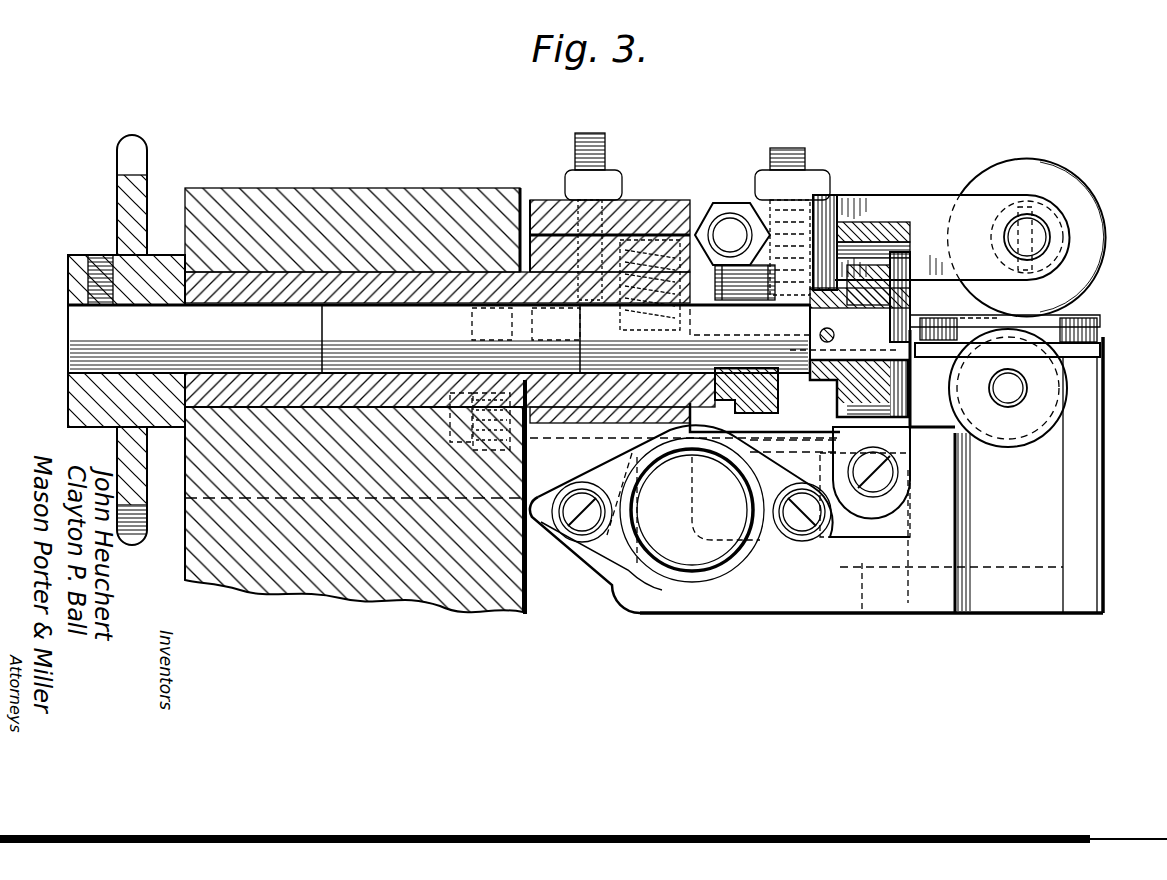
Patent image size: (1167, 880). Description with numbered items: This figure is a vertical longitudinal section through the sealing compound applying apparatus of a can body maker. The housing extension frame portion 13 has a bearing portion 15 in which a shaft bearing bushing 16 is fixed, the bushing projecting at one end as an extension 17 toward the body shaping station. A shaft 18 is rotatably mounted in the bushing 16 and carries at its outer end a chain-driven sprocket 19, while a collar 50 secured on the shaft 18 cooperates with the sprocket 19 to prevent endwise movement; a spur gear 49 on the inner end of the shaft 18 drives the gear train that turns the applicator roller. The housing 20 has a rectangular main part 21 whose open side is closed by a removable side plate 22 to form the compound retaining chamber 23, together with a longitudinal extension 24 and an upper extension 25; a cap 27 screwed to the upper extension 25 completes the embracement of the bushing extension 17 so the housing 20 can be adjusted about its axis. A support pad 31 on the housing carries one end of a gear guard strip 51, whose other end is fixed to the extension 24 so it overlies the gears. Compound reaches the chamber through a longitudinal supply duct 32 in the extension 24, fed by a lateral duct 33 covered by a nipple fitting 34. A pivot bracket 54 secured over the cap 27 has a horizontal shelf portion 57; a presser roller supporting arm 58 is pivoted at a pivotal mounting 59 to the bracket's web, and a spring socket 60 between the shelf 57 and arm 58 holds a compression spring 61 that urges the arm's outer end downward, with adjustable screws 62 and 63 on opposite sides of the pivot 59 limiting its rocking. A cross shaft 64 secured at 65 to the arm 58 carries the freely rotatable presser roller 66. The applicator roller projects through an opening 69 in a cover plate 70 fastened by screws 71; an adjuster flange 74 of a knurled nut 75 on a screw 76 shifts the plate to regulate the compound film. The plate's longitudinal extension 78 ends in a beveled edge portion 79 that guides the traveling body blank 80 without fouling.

The housing extension frame portion 13 is at (332, 590).
The bearing portion 15 is at (313, 196).
The shaft bearing bushing 16 is at (224, 283).
The bushing extension 17 is at (555, 400).
The shaft 18 is at (439, 339).
The sprocket 19 is at (140, 135).
The housing 20 is at (1050, 556).
The rectangular main part 21 is at (882, 471).
The removable side plate 22 is at (1085, 506).
The sealing compound retaining chamber 23 is at (1085, 462).
The longitudinal extension 24 is at (768, 590).
The upper extension 25 is at (548, 470).
The cap 27 is at (503, 213).
The support pad 31 is at (778, 406).
The longitudinal compound supply duct 32 is at (866, 568).
The lateral duct 33 is at (665, 556).
The nipple fitting 34 is at (700, 582).
The spur gear 49 is at (938, 311).
The collar 50 is at (760, 420).
The gear guard strip 51 is at (860, 230).
The pivot bracket 54 is at (553, 245).
The horizontal shelf portion 57 is at (700, 326).
The presser roller supporting arm 58 is at (925, 200).
The pivotal mounting 59 is at (730, 230).
The spring socket 60 is at (644, 200).
The compression spring 61 is at (633, 285).
The adjustable screw 62 is at (790, 150).
The adjustable screw 63 is at (595, 133).
The cross shaft 64 is at (1045, 238).
The cross shaft securement 65 is at (1040, 207).
The presser roller 66 is at (1046, 172).
The opening 69 is at (1092, 312).
The cover plate 70 is at (1080, 352).
The screws 71 is at (1097, 332).
The adjuster flange 74 is at (1068, 388).
The knurled nut 75 is at (1014, 395).
The screw 76 is at (1090, 436).
The longitudinal extension 78 is at (908, 372).
The beveled edge portion 79 is at (850, 319).
The body blank 80 is at (982, 316).